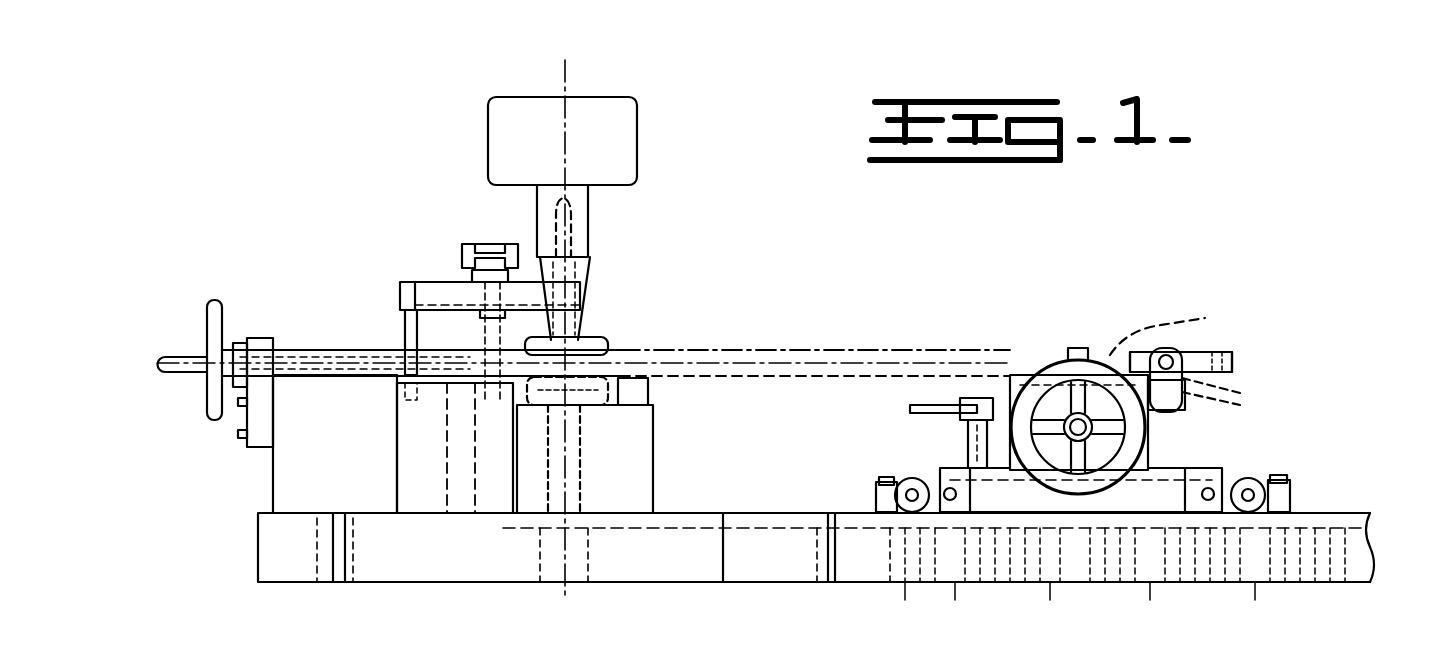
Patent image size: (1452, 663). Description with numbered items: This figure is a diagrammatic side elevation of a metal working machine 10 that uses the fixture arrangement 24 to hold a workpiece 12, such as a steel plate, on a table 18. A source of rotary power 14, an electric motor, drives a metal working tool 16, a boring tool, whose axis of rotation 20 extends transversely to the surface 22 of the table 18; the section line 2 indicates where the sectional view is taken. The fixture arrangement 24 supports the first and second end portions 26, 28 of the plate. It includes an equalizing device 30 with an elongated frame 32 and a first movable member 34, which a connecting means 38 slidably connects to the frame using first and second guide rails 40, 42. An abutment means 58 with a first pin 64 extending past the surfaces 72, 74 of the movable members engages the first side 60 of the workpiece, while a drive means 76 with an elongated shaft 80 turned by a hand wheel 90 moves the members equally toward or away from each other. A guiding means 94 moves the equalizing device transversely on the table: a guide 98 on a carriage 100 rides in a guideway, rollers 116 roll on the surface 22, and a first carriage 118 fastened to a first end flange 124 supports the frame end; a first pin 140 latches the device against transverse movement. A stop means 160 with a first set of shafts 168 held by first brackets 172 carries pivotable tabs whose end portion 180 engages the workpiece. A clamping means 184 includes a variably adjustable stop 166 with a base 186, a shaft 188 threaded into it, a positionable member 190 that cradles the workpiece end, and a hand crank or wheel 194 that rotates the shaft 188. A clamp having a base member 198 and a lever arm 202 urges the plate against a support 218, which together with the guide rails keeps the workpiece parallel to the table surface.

The section line 2- 2 is at (200, 172).
The metal working machine 10 is at (372, 118).
The workpiece 12 is at (583, 338).
The source of rotary power 14 is at (637, 110).
The metal working tool 16 is at (580, 330).
The table 18 is at (268, 547).
The axis of rotation 20 is at (568, 78).
The surface 22 is at (293, 444).
The fixture arrangement 24 is at (304, 286).
The first end portion 26 is at (618, 348).
The second end portion 28 is at (1043, 373).
The equalizing device 30 is at (1180, 320).
The elongated frame 32 is at (1104, 532).
The first movable member 34 is at (1243, 396).
The connecting means 38 is at (1022, 375).
The first guide rail 40 is at (1010, 380).
The second guide rail 42 is at (1185, 398).
The abutment means 58 is at (1089, 457).
The first side 60 is at (823, 377).
The first pin 64 is at (1073, 348).
The surface of first movable member 72 is at (1191, 339).
The surface of second movable member 74 is at (1240, 361).
The drive means 76 is at (1050, 488).
The elongated shaft 80 is at (1078, 480).
The hand wheel 90 is at (1070, 480).
The guiding means 94 is at (1240, 478).
The guide 98 is at (1330, 503).
The carriage 100 is at (1298, 486).
The rollers 116 is at (880, 492).
The first carriage 118 is at (1165, 498).
The first end flange 124 is at (1010, 456).
The first pin 140 is at (927, 433).
The stop means 160 is at (1222, 339).
The variably adjustable stop 166 is at (185, 322).
The first set of shafts 168 is at (1172, 348).
The first brackets 172 is at (1185, 415).
The end portion 180 is at (1185, 365).
The clamping means 184 is at (378, 222).
The base 186 is at (352, 450).
The shaft 188 is at (225, 386).
The positionable member 190 is at (583, 342).
The hand crank or wheel 194 is at (160, 362).
The base member 198 is at (438, 465).
The lever arm 202 is at (430, 283).
The support 218 is at (655, 470).